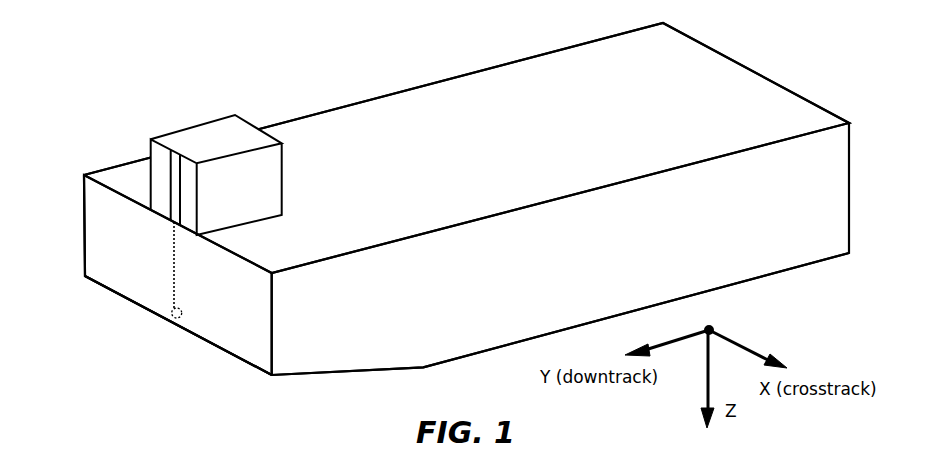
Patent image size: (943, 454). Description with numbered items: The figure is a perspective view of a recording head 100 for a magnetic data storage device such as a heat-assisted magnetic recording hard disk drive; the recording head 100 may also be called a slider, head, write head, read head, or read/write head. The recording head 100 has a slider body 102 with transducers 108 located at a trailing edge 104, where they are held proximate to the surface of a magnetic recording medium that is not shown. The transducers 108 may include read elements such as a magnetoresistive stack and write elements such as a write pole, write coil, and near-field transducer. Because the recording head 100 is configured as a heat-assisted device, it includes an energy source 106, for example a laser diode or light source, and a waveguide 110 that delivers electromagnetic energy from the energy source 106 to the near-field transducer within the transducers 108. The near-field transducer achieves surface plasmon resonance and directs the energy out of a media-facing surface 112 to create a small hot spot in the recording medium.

The recording head 100 is at (795, 70).
The slider body 102 is at (408, 100).
The trailing edge 104 is at (88, 252).
The energy source 106 is at (175, 137).
The transducers 108 is at (172, 333).
The waveguide 110 is at (177, 267).
The media-facing surface 112 is at (257, 373).